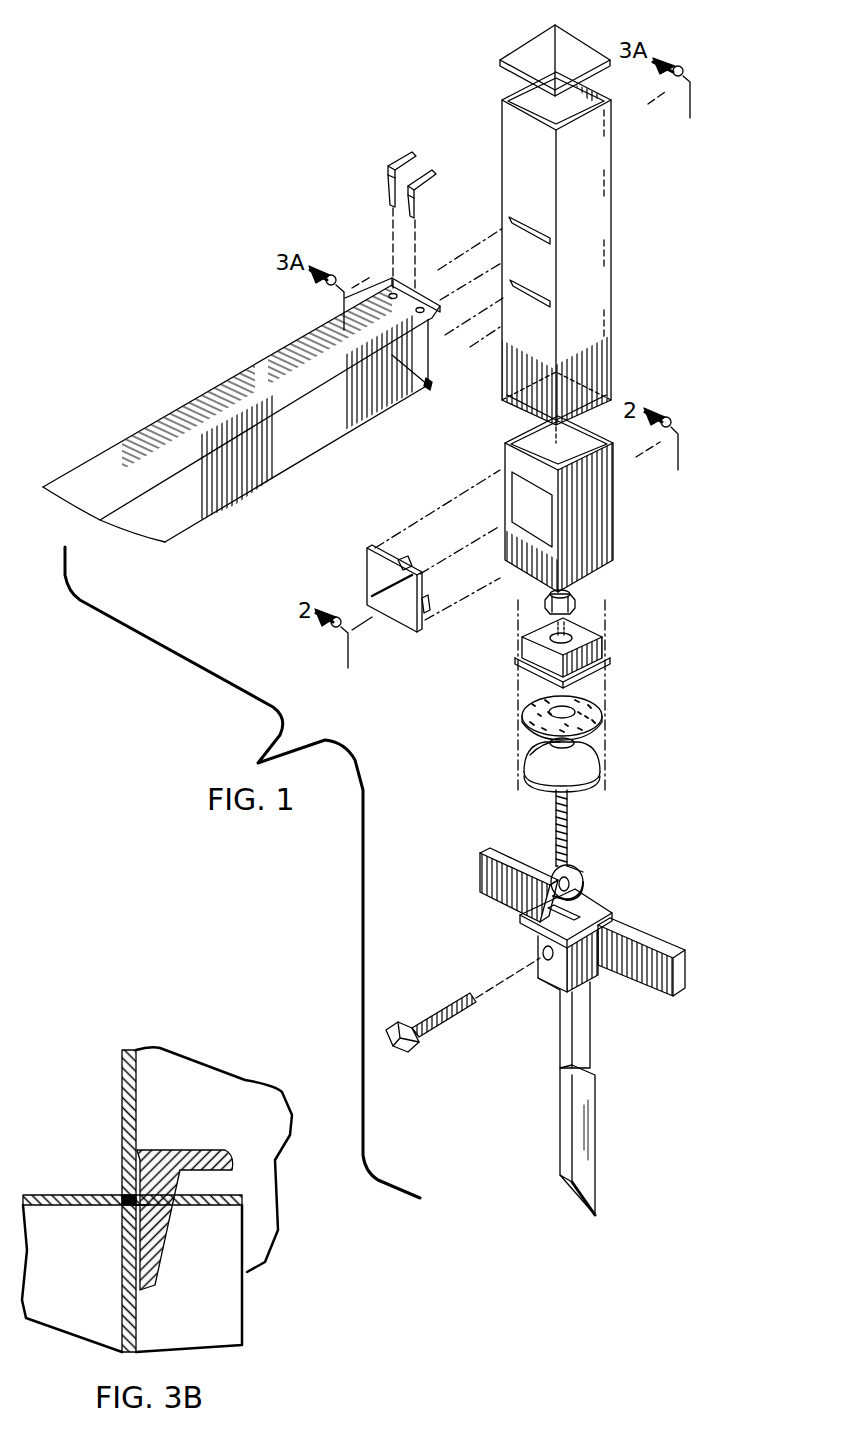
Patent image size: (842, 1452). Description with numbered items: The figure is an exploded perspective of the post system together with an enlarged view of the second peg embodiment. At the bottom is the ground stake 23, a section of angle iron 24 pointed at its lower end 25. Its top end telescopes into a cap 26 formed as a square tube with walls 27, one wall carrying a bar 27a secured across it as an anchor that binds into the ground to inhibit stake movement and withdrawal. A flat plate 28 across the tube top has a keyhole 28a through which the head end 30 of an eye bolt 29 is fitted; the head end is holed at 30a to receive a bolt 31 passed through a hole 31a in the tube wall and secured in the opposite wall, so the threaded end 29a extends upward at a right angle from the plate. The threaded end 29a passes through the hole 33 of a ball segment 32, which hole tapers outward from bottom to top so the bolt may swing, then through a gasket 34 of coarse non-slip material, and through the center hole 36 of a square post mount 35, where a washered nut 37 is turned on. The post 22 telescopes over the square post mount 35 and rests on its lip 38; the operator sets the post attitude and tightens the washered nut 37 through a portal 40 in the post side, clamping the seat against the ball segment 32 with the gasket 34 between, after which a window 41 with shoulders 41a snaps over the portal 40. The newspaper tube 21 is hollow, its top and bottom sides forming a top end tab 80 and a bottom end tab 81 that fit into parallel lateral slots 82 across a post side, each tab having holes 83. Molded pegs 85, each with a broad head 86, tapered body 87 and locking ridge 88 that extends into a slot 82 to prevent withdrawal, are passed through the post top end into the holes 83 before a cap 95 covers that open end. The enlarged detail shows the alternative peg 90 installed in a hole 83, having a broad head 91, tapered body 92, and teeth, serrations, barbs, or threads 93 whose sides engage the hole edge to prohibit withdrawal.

In FIG. 1, the newspaper tube 21 is at (305, 446).
In FIG. 3B, the newspaper tube 21 is at (75, 1195).
In FIG. 1, the post 22 is at (600, 350).
In FIG. 3B, the post 22 is at (122, 1096).
In FIG. 1, the ground stake 23 is at (495, 972).
In FIG. 1, the angle iron section 24 is at (578, 1128).
In FIG. 1, the lower end 25 is at (612, 1212).
In FIG. 1, the cap 26 is at (622, 905).
In FIG. 1, the walls 27 is at (590, 950).
In FIG. 1, the bar 27a is at (662, 975).
In FIG. 1, the flat plate 28 is at (530, 900).
In FIG. 1, the keyhole 28a is at (540, 935).
In FIG. 1, the eye bolt 29 is at (585, 825).
In FIG. 1, the threaded end 29a is at (555, 798).
In FIG. 1, the head end 30 is at (550, 870).
In FIG. 1, the hole 30a is at (580, 870).
In FIG. 1, the bolt 31 is at (440, 1045).
In FIG. 1, the hole 31a is at (550, 965).
In FIG. 1, the ball segment 32 is at (540, 754).
In FIG. 1, the hole 33 is at (595, 760).
In FIG. 1, the gasket 34 is at (600, 712).
In FIG. 1, the square post mount 35 is at (593, 646).
In FIG. 1, the center hole 36 is at (573, 634).
In FIG. 1, the washered nut 37 is at (575, 605).
In FIG. 1, the lip 38 is at (600, 672).
In FIG. 1, the portal 40 is at (520, 485).
In FIG. 1, the window 41 is at (378, 568).
In FIG. 1, the shoulders 41a is at (412, 560).
In FIG. 1, the top end tab 80 is at (398, 290).
In FIG. 1, the bottom end tab 81 is at (430, 386).
In FIG. 1, the lateral slots 82 is at (530, 228).
In FIG. 1, the holes 83 is at (370, 290).
In FIG. 3B, the holes 83 is at (125, 1205).
In FIG. 1, the peg 85 is at (383, 195).
In FIG. 1, the broad head 86 is at (405, 150).
In FIG. 1, the tapered body 87 is at (388, 192).
In FIG. 1, the locking ridge 88 is at (388, 172).
In FIG. 3B, the peg 90 is at (248, 1172).
In FIG. 3B, the broad head 91 is at (178, 1150).
In FIG. 3B, the tapered body 92 is at (128, 1240).
In FIG. 3B, the teeth, serrations, barbs, or threads 93 is at (172, 1222).
In FIG. 1, the cap 95 is at (522, 48).